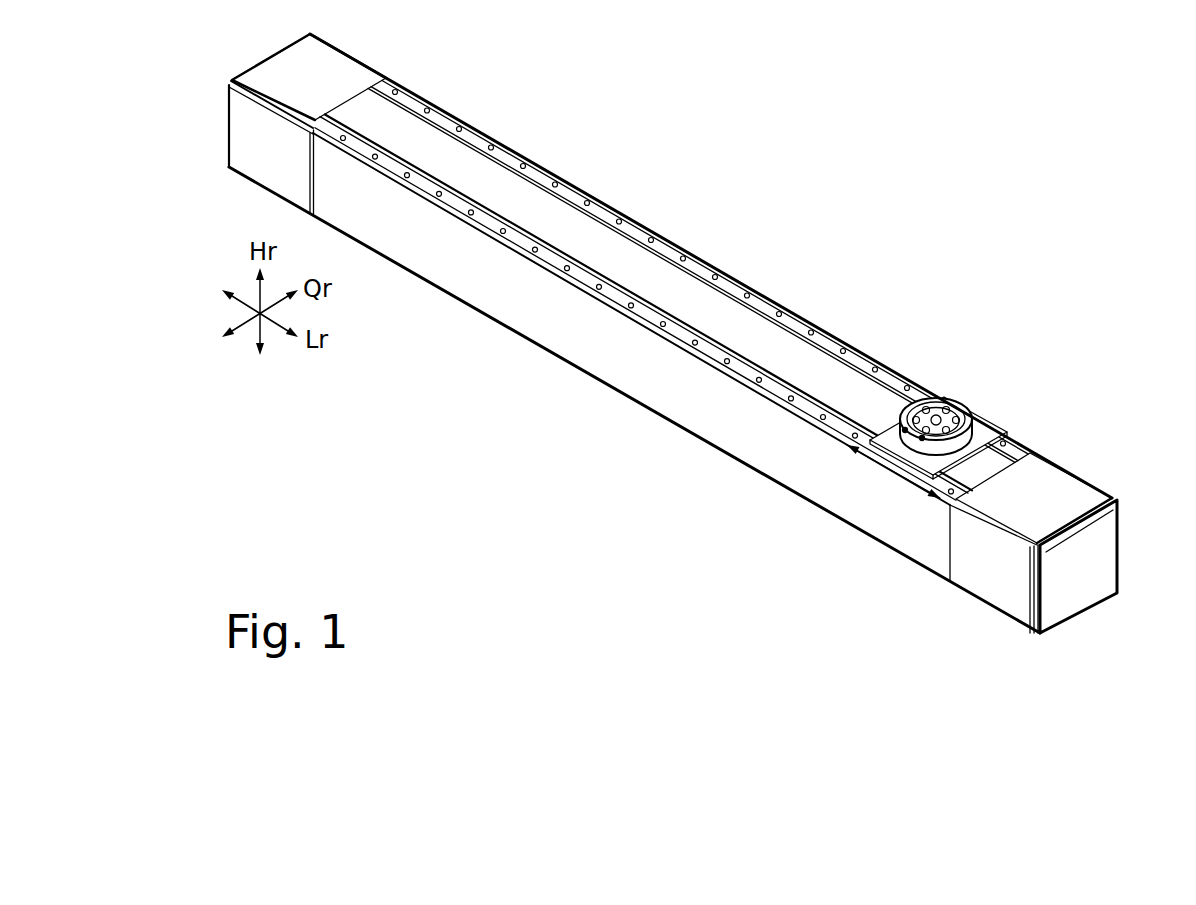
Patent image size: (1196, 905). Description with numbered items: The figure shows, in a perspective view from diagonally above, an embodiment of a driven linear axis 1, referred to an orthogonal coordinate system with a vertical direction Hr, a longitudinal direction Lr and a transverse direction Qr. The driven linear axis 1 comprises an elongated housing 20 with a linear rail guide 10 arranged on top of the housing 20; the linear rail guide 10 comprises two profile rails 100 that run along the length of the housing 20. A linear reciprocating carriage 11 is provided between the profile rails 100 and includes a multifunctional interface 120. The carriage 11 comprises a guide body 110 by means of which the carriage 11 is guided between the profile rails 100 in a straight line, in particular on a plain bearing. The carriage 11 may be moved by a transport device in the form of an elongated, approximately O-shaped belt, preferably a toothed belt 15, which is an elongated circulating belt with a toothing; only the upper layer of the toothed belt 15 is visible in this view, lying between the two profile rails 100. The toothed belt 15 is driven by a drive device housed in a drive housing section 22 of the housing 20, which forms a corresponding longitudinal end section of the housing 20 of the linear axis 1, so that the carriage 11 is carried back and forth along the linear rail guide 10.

The driven linear axis 1 is at (708, 333).
The linear rail guide 10 is at (671, 268).
The carriage 11 is at (893, 440).
The toothed belt 15 is at (528, 217).
The housing 20 is at (552, 355).
The drive housing section 22 is at (1087, 558).
The profile rails 100 is at (671, 291).
The guide body 110 is at (862, 453).
The multifunctional interface 120 is at (965, 440).